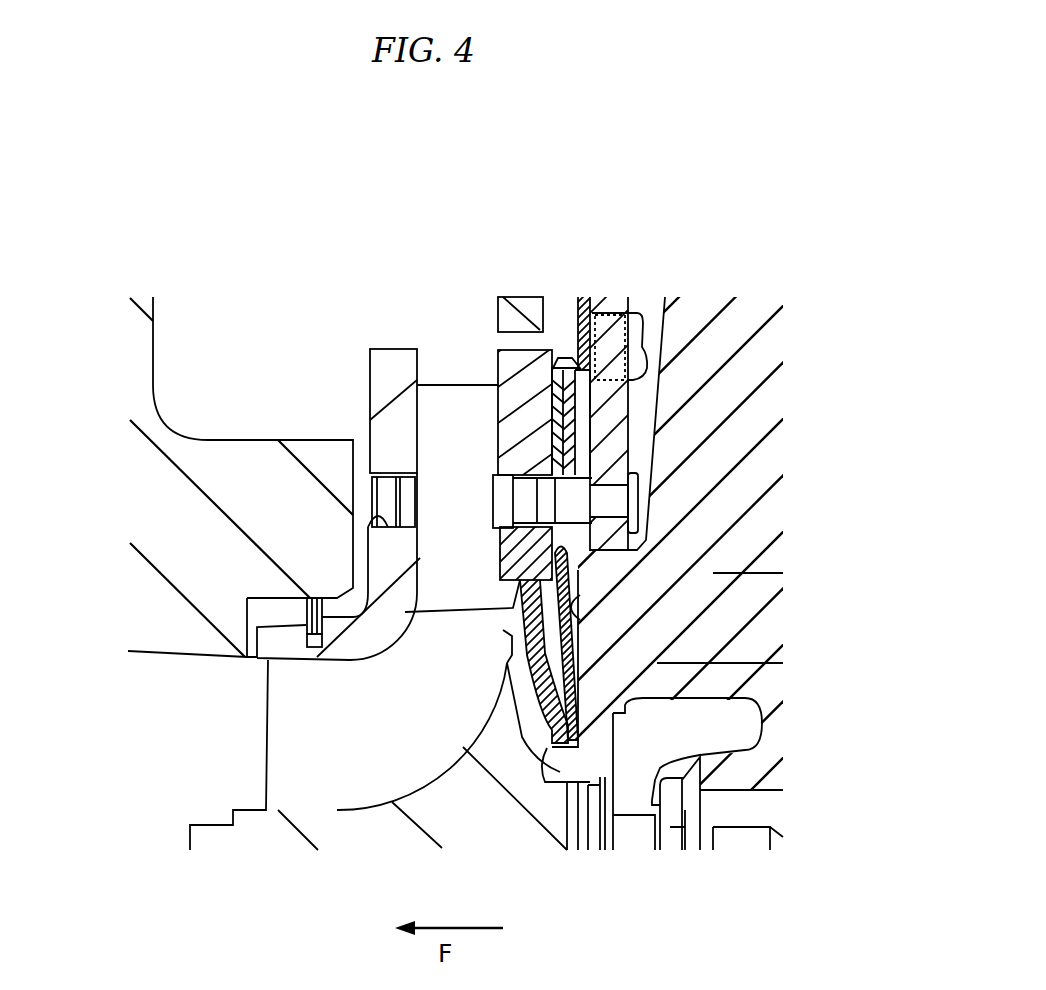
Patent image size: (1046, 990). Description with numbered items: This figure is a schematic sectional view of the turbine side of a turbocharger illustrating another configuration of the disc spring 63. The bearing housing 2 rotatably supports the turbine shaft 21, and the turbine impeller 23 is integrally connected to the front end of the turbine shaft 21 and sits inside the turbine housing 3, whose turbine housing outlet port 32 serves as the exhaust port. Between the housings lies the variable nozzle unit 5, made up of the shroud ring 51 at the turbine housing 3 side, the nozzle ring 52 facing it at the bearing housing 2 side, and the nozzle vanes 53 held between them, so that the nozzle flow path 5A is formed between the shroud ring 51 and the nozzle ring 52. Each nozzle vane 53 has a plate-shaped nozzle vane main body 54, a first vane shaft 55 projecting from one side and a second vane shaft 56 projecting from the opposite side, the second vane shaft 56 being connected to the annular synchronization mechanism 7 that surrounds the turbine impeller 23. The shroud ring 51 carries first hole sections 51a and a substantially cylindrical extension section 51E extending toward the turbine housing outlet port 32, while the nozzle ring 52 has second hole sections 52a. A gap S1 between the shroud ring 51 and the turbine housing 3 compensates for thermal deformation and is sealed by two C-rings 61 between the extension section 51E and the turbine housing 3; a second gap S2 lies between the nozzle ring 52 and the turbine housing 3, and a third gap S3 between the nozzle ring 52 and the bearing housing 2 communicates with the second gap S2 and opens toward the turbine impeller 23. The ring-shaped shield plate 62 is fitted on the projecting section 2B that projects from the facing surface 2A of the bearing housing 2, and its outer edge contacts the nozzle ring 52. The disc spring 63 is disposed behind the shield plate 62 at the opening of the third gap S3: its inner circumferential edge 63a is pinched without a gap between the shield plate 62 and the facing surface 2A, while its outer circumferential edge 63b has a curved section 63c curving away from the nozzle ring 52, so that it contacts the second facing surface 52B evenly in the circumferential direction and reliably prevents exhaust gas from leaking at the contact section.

The bearing housing 2 is at (561, 533).
The facing surface 2A is at (720, 618).
The projecting section 2B is at (563, 757).
The turbine housing 3 is at (260, 512).
The variable nozzle unit 5 is at (439, 273).
The nozzle flow path 5A is at (469, 350).
The synchronization mechanism 7 is at (636, 405).
The turbine shaft 21 is at (634, 837).
The turbine impeller 23 is at (212, 806).
The turbine housing outlet port 32 is at (173, 653).
The shroud ring 51 is at (296, 505).
The first hole sections 51a is at (367, 520).
The extension section 51E is at (335, 666).
The nozzle ring 52 is at (537, 550).
The second hole sections 52a is at (523, 527).
The second facing surface 52B is at (550, 540).
The nozzle vanes 53 is at (409, 316).
The nozzle vane main body 54 is at (447, 400).
The first vane shaft 55 is at (390, 483).
The second vane shaft 56 is at (563, 497).
The C-ring 61 is at (295, 612).
The shield plate 62 is at (530, 612).
The disc spring 63 is at (625, 550).
The inner circumferential edge 63a is at (590, 729).
The outer circumferential edge 63b is at (575, 558).
The curved section 63c is at (575, 565).
The gap S1 is at (363, 490).
The second gap S2 is at (535, 340).
The third gap S3 is at (580, 546).